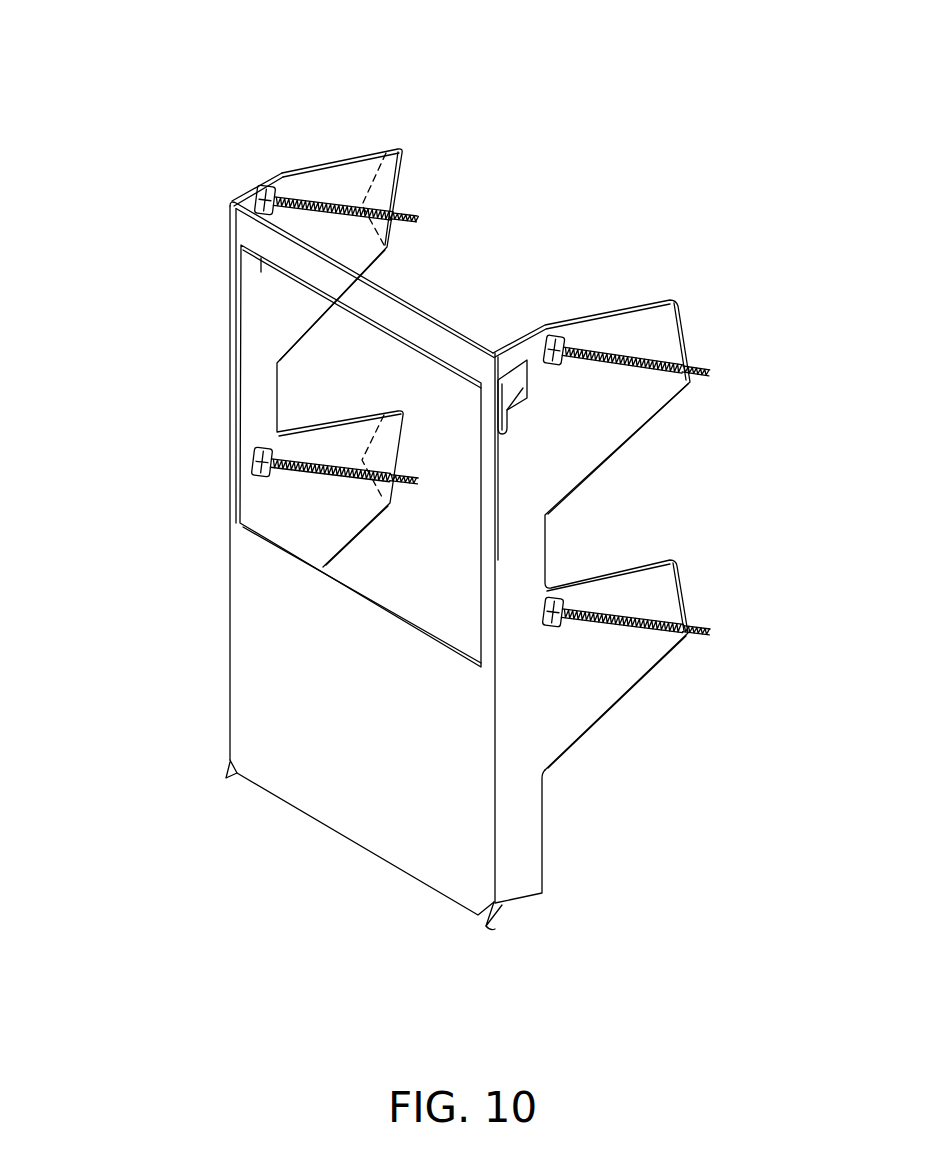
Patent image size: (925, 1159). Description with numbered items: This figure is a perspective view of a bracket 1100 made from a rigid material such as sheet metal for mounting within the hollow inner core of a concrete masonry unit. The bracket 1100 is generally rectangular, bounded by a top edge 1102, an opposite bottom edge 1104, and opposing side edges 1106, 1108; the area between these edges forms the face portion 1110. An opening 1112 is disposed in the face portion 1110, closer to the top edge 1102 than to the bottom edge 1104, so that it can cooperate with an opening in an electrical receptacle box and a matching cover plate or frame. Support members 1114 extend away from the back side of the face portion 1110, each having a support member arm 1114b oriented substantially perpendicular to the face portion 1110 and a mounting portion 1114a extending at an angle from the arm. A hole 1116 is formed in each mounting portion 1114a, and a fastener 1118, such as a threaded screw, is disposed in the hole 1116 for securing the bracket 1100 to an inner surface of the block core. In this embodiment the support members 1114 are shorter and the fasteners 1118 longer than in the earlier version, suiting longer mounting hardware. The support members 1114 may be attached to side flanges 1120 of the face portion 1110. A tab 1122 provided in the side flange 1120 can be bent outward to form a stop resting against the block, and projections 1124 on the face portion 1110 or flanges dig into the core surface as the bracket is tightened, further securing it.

The bracket 1100 is at (186, 51).
The top edge 1102 is at (460, 328).
The bottom edge 1104 is at (393, 867).
The side edge 1106 is at (230, 410).
The side edge 1108 is at (495, 842).
The face portion 1110 is at (337, 760).
The opening 1112 is at (307, 408).
The support member 1114 is at (297, 313).
The mounting portion 1114a is at (677, 330).
The support member arm 1114b is at (363, 250).
The hole 1116 is at (397, 211).
The fastener 1118 is at (626, 352).
The side flange 1120 is at (518, 780).
The tab 1122 is at (512, 405).
The projection 1124 is at (226, 778).